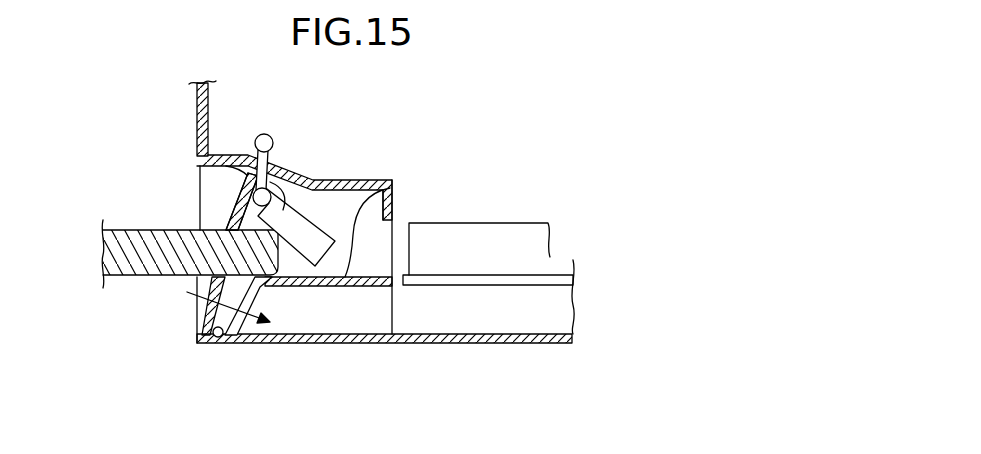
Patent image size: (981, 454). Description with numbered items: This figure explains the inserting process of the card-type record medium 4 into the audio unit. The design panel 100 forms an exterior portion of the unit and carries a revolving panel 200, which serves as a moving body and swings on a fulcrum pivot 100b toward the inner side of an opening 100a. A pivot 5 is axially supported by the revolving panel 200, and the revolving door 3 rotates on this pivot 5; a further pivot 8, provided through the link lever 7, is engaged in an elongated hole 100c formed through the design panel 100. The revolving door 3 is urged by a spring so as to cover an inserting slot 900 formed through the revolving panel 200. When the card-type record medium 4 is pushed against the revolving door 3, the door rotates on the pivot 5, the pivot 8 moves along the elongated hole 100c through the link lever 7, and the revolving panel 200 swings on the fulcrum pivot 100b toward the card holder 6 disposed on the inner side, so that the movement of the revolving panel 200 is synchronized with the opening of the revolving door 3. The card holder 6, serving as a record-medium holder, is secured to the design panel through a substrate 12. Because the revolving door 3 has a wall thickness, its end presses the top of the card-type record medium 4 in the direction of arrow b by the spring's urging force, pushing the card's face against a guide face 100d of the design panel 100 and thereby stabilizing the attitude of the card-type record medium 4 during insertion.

The design panel 100 is at (197, 112).
The opening 100a is at (205, 177).
The fulcrum pivot 100b is at (218, 338).
The elongated hole 100c is at (248, 157).
The guide face 100d is at (392, 181).
The link lever 7 is at (233, 157).
The pivot 8 is at (273, 143).
The pivot 5 is at (249, 183).
The revolving door 3 is at (295, 220).
The inserting slot 900 is at (228, 215).
The card-type record medium 4 is at (135, 229).
The revolving panel 200 is at (205, 328).
The arrow b is at (230, 302).
The card holder 6 is at (487, 222).
The substrate 12 is at (533, 287).